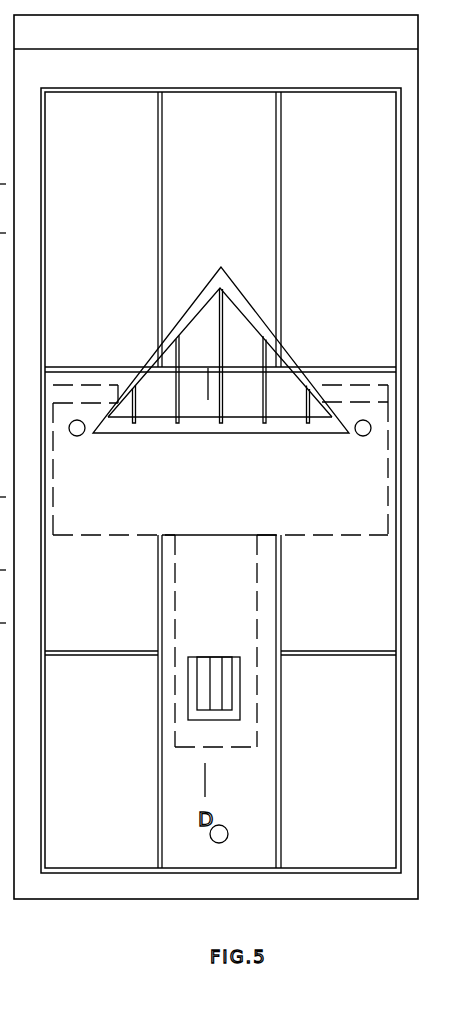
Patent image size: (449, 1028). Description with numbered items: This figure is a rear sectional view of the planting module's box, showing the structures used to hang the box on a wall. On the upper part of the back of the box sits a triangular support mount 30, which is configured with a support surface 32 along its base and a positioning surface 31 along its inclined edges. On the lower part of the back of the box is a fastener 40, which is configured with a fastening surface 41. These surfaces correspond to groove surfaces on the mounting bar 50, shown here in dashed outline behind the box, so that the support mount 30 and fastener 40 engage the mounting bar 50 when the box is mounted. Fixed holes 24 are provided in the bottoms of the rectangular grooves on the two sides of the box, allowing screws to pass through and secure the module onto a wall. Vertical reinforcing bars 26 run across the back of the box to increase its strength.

The fixed holes 24 is at (81, 436).
The reinforcing bars 26 is at (294, 92).
The support mount 30 is at (221, 361).
The positioning surface 31 is at (288, 357).
The support surface 32 is at (228, 435).
The fastener 40 is at (257, 656).
The fastening surface 41 is at (212, 725).
The mounting bar 50 is at (302, 518).